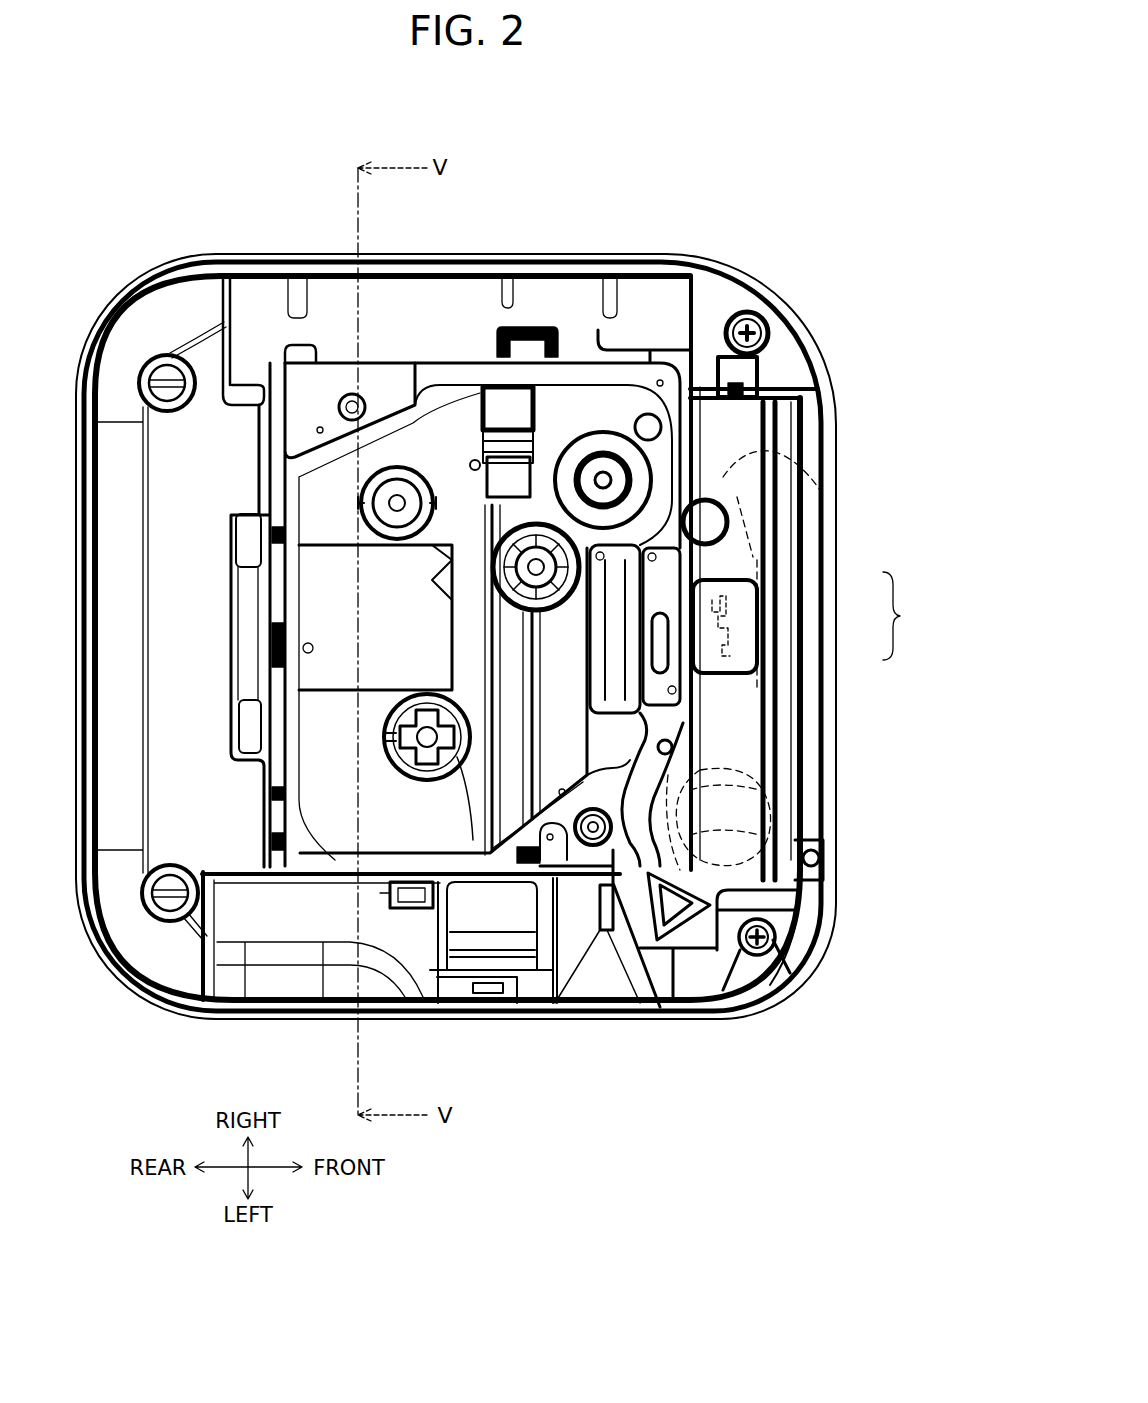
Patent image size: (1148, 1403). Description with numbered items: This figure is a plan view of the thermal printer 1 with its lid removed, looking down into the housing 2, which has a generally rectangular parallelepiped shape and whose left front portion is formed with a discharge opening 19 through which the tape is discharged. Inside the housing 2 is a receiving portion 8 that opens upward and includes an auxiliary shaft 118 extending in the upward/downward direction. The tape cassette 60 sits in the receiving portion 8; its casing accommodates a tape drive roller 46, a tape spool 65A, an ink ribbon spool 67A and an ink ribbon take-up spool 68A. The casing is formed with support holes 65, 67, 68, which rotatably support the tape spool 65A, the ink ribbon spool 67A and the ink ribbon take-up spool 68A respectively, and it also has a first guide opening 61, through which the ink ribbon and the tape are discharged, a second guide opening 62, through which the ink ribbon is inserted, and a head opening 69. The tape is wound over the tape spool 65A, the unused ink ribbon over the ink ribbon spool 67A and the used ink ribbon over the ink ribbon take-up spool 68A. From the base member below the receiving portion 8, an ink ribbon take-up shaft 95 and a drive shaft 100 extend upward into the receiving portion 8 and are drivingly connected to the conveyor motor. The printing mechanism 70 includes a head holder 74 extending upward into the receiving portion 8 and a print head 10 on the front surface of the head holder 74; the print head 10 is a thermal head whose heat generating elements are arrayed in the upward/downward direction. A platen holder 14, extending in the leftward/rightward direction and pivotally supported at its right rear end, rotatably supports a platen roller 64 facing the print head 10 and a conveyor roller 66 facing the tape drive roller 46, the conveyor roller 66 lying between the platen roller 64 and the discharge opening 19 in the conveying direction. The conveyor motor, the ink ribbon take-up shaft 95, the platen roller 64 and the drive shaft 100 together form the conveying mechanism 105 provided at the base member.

The thermal printer 1 is at (651, 122).
The housing 2 is at (792, 283).
The receiving portion 8 is at (309, 870).
The print head 10 is at (682, 603).
The platen holder 14 is at (806, 492).
The discharge opening 19 is at (627, 977).
The tape drive roller 46 is at (618, 905).
The tape cassette 60 is at (347, 350).
The first guide opening 61 is at (660, 722).
The second guide opening 62 is at (620, 775).
The platen roller 64 is at (762, 798).
The support hole 65 is at (428, 782).
The tape spool 65A is at (462, 795).
The conveyor roller 66 is at (762, 832).
The support hole 67 is at (618, 447).
The ink ribbon spool 67A is at (660, 412).
The support hole 68 is at (607, 445).
The ink ribbon take-up spool 68A is at (470, 440).
The head opening 69 is at (645, 745).
The printing mechanism 70 is at (905, 616).
The head holder 74 is at (638, 607).
The ink ribbon take-up shaft 95 is at (505, 542).
The drive shaft 100 is at (557, 845).
The conveying mechanism 105 is at (800, 905).
The auxiliary shaft 118 is at (387, 915).